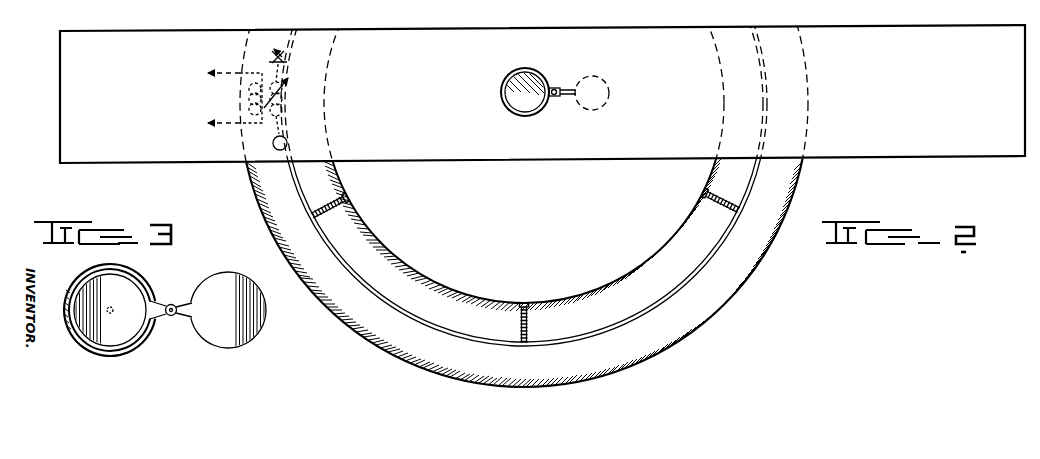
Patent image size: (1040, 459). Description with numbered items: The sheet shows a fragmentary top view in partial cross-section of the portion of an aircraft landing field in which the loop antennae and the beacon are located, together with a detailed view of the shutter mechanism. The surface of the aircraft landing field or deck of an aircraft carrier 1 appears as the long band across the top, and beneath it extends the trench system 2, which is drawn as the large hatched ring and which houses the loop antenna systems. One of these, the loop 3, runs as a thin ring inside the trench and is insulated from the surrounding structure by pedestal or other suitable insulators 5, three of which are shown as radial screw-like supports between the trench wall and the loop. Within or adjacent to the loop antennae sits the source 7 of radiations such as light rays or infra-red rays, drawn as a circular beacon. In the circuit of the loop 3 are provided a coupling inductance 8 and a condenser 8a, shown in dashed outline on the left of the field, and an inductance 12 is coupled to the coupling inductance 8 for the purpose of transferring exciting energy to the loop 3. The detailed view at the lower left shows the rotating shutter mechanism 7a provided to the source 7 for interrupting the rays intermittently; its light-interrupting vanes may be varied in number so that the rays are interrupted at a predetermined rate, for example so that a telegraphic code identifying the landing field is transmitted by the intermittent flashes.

In FIG. 2, the surface of the aircraft landing field 1 is at (436, 46).
In FIG. 2, the trench system 2 is at (282, 213).
In FIG. 2, the loop 3 is at (342, 266).
In FIG. 2, the pedestal insulator 5 is at (326, 207).
In FIG. 2, the source of radiations 7 is at (512, 118).
In FIG. 3, the rotating shutter mechanism 7a is at (213, 327).
In FIG. 2, the coupling inductance 8 is at (283, 99).
In FIG. 2, the condenser 8a is at (287, 53).
In FIG. 2, the inductance 12 is at (250, 96).